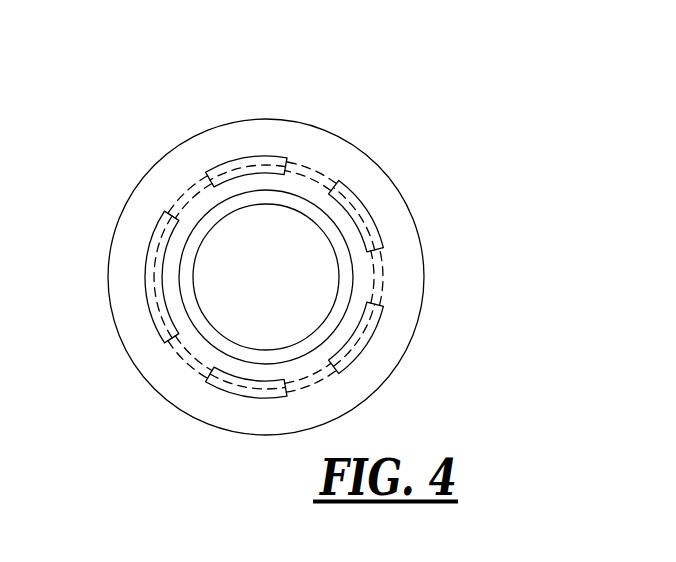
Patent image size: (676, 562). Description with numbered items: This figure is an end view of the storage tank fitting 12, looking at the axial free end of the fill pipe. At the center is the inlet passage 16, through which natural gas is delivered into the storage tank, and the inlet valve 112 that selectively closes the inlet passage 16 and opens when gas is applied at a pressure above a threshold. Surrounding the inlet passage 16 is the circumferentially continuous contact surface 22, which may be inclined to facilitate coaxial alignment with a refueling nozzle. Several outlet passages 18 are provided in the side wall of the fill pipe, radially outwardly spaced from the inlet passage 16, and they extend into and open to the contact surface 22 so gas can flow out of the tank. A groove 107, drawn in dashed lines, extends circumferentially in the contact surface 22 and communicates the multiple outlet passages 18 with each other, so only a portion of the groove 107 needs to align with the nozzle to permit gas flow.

The storage tank fitting 12 is at (384, 97).
The contact surface 22 is at (288, 137).
The central inlet passage 16 is at (345, 270).
The outlet passages 18 is at (240, 165).
The inlet valve 112 is at (296, 284).
The groove 107 is at (178, 362).